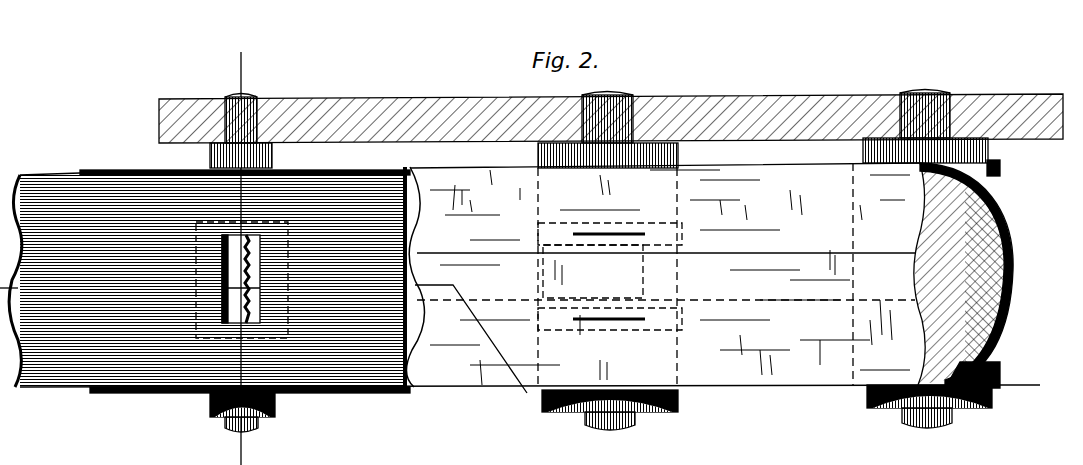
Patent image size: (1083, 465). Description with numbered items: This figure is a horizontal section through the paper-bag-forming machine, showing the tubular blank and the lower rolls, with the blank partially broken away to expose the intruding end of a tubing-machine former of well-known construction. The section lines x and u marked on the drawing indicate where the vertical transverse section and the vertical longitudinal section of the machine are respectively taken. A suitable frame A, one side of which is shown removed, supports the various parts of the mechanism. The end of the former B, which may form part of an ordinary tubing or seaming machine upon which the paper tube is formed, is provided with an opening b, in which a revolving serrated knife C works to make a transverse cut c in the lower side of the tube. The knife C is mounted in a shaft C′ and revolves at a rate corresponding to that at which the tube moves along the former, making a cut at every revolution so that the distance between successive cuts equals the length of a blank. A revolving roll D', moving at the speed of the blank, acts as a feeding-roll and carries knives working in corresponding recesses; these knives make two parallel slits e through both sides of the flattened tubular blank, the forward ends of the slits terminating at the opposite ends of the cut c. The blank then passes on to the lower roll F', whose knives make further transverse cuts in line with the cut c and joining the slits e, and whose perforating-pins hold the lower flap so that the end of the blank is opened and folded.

The frame A is at (611, 107).
The former B is at (216, 292).
The revolving serrated knife C is at (243, 310).
The knife-shaft C′ is at (262, 405).
The revolving roll D' is at (612, 413).
The lower roll F' is at (931, 409).
The opening b is at (241, 279).
The transverse cut c is at (598, 271).
The slits e is at (610, 275).
The section line x is at (237, 248).
The section line u is at (527, 341).